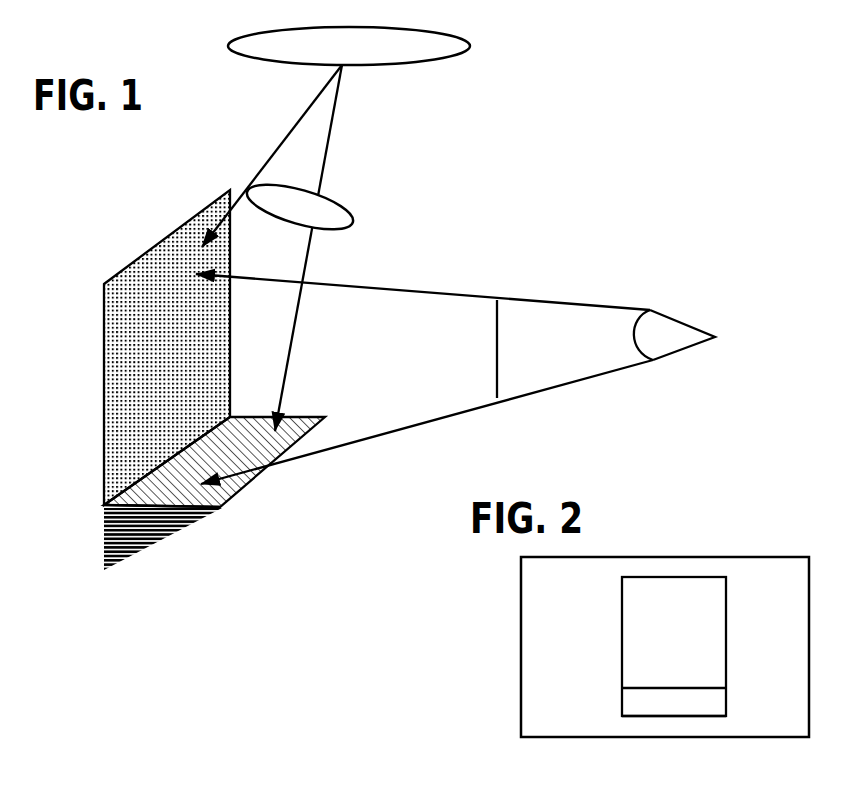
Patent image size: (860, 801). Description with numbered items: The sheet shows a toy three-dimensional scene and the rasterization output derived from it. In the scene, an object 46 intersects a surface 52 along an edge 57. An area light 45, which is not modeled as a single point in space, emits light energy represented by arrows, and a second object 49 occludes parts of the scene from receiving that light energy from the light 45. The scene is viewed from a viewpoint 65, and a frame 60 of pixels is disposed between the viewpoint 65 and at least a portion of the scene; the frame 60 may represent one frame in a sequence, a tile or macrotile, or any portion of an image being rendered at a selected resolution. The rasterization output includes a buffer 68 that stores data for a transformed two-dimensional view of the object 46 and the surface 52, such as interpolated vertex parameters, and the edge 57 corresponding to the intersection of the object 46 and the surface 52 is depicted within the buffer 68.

In FIG. 1, the area light 45 is at (450, 57).
In FIG. 1, the object 46 is at (155, 283).
In FIG. 2, the object 46 is at (657, 578).
In FIG. 1, the object 49 is at (355, 220).
In FIG. 1, the surface 52 is at (222, 483).
In FIG. 2, the surface 52 is at (673, 718).
In FIG. 1, the edge 57 is at (150, 472).
In FIG. 2, the edge 57 is at (637, 688).
In FIG. 1, the frame 60 is at (497, 318).
In FIG. 1, the viewpoint 65 is at (655, 313).
In FIG. 2, the buffer 68 is at (520, 722).